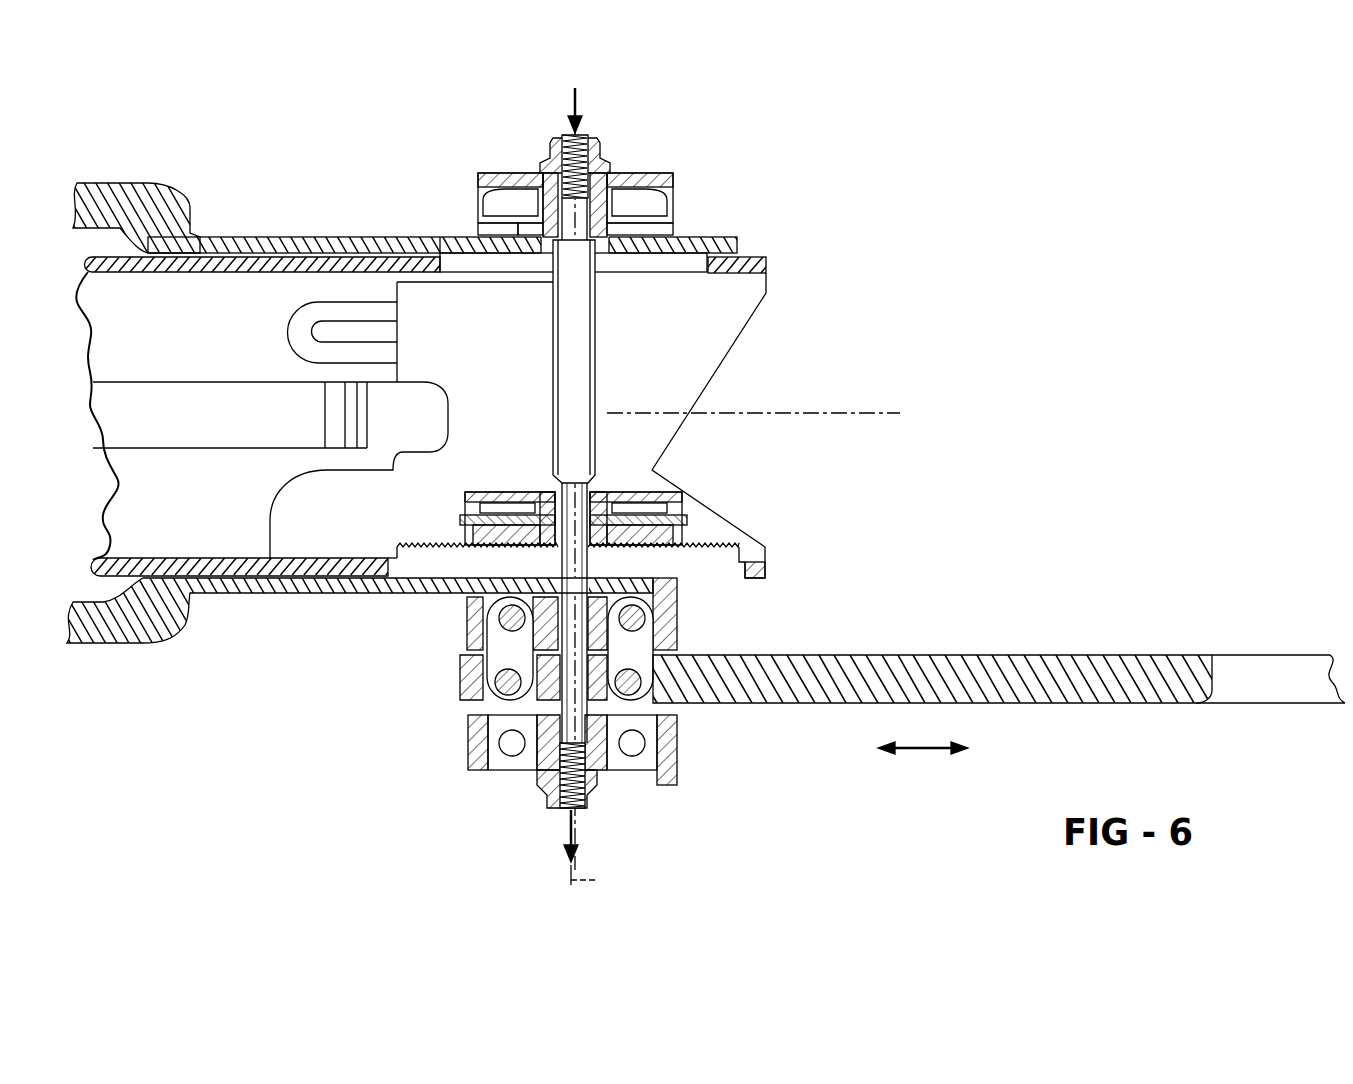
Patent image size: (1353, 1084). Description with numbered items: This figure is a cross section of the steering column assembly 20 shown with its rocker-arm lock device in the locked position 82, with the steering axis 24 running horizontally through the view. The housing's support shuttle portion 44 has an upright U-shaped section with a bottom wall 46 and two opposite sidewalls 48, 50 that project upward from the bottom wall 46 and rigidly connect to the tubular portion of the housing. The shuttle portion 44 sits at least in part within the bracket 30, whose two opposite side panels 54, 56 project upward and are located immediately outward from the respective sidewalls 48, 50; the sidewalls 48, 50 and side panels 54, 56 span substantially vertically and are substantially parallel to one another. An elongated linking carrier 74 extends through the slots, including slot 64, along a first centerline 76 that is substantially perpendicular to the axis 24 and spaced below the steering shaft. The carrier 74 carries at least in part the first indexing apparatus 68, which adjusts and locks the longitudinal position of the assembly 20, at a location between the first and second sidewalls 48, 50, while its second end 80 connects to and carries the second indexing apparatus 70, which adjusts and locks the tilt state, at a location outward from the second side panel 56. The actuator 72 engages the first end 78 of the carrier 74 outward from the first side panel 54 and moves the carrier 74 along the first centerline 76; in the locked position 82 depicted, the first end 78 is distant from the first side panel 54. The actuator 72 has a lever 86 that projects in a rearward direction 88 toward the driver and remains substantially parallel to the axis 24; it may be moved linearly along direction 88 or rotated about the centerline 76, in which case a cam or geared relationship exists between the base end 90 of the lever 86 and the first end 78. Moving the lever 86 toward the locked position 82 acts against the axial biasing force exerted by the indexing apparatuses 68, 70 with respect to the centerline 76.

The steering column assembly 20 is at (872, 243).
The axis 24 is at (832, 416).
The bracket 30 is at (362, 240).
The support shuttle portion 44 is at (742, 331).
The bottom wall 46 is at (643, 495).
The first sidewall 48 is at (323, 557).
The second sidewall 50 is at (740, 258).
The first side panel 54 is at (292, 594).
The second side panel 56 is at (440, 236).
The slot 64 is at (633, 265).
The first indexing apparatus 68 is at (720, 518).
The second indexing apparatus 70 is at (678, 200).
The actuator 72 is at (472, 786).
The carrier 74 is at (597, 380).
The first centerline 76 is at (600, 878).
The first end 78 is at (597, 797).
The second end 80 is at (610, 158).
The locked position 82 is at (707, 388).
The lever 86 is at (908, 655).
The rearward direction 88 is at (918, 750).
The base end 90 is at (460, 707).